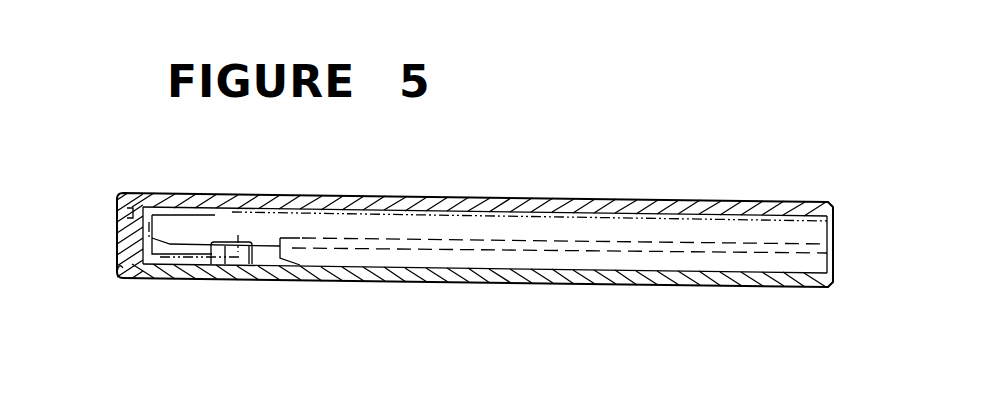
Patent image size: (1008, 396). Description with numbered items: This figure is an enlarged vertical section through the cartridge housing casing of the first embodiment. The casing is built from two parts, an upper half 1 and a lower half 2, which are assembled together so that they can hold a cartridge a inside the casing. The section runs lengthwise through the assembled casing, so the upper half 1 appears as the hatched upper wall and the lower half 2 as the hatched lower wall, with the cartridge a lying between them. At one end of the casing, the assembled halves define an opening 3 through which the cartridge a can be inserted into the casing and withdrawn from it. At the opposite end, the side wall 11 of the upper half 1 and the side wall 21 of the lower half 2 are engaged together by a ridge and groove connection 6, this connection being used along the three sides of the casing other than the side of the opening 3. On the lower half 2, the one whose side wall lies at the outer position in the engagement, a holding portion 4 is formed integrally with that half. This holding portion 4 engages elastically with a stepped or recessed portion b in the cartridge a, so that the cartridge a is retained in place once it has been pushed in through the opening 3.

The upper half 1 is at (484, 204).
The lower half 2 is at (417, 282).
The opening 3 is at (834, 258).
The holding portion 4 is at (220, 280).
The ridge and groove connection 6 is at (126, 194).
The side wall of the upper half 11 is at (160, 216).
The side wall of the lower half 21 is at (118, 238).
The cartridge a is at (358, 216).
The stepped or recessed portion b is at (238, 235).